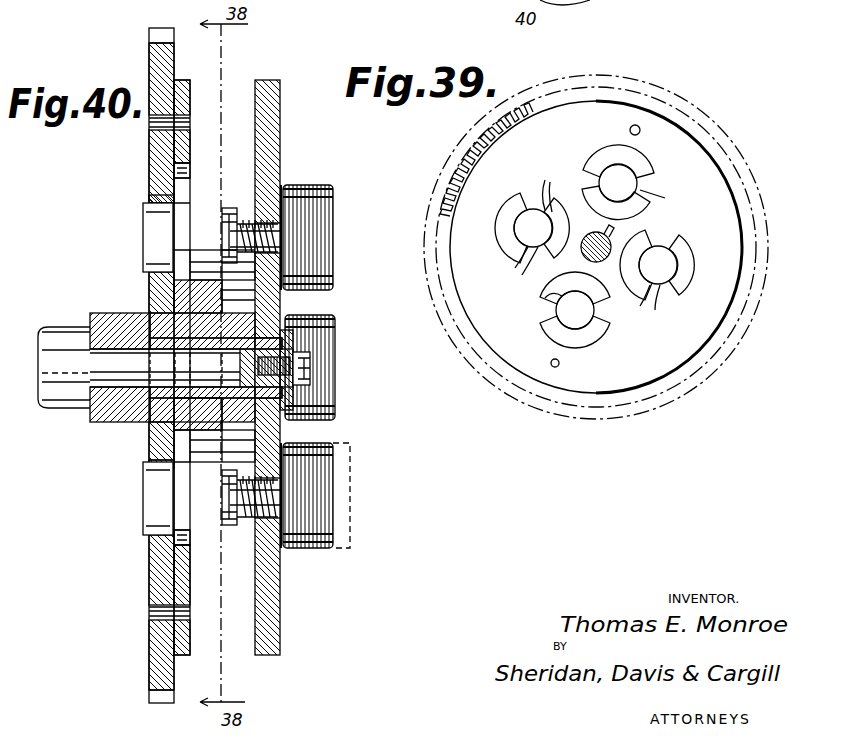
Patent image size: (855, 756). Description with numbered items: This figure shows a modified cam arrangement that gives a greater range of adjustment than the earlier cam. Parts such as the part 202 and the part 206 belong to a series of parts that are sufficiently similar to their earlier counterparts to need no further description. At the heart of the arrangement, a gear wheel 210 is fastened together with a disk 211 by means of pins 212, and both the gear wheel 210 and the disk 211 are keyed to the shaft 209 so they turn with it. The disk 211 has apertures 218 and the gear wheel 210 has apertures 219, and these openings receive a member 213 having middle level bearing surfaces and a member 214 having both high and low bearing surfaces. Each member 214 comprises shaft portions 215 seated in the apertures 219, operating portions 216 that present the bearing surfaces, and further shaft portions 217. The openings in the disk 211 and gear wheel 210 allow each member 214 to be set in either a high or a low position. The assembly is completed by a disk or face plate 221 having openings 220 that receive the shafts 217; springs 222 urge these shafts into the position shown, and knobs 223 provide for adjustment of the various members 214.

In FIG. 39, the part of the modified cam arrangement 202 is at (578, 9).
In FIG. 40, the part of the modified cam arrangement 206 is at (60, 327).
In FIG. 40, the shaft 209 is at (126, 300).
In FIG. 40, the gear wheel 210 is at (150, 56).
In FIG. 39, the gear wheel 210 is at (462, 160).
In FIG. 40, the disk 211 is at (190, 82).
In FIG. 39, the disk 211 is at (505, 333).
In FIG. 40, the pins 212 is at (152, 122).
In FIG. 39, the pins 212 is at (640, 126).
In FIG. 40, the member having middle level bearing surfaces 213 is at (222, 320).
In FIG. 40, the member having high and low bearing surfaces 214 is at (215, 300).
In FIG. 40, the shaft portions 215 is at (160, 216).
In FIG. 40, the operating portions 216 is at (160, 262).
In FIG. 40, the further shaft portions 217 is at (278, 235).
In FIG. 40, the apertures 218 is at (182, 182).
In FIG. 39, the apertures 218 is at (532, 209).
In FIG. 40, the apertures 219 is at (147, 200).
In FIG. 39, the apertures 219 is at (558, 300).
In FIG. 40, the openings 220 is at (272, 226).
In FIG. 40, the face plate 221 is at (281, 108).
In FIG. 40, the springs 222 is at (245, 225).
In FIG. 40, the knobs 223 is at (336, 206).